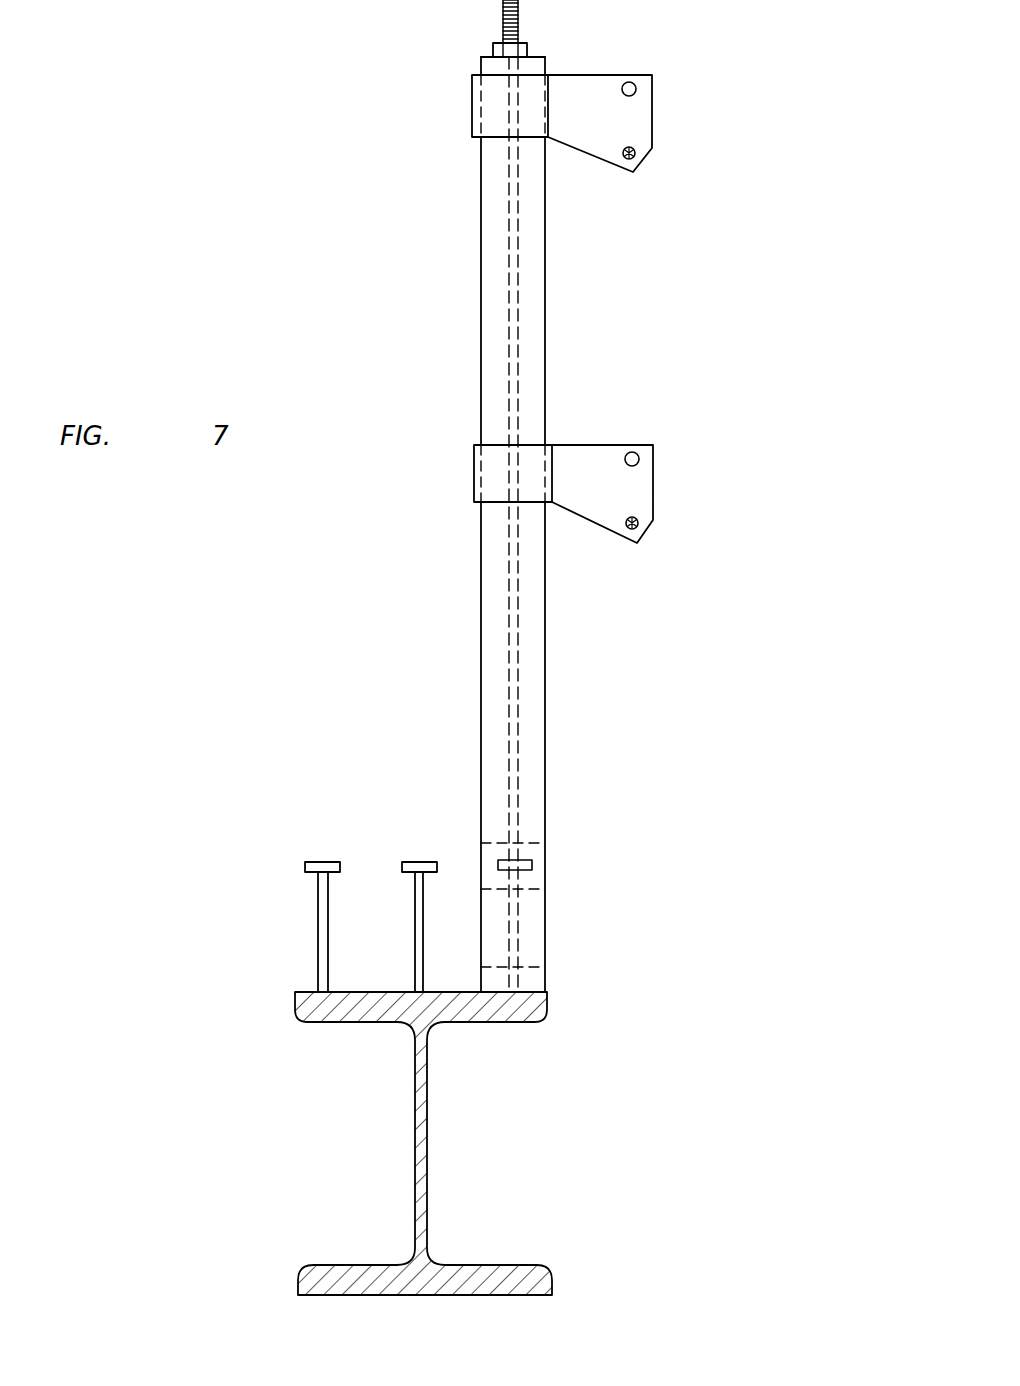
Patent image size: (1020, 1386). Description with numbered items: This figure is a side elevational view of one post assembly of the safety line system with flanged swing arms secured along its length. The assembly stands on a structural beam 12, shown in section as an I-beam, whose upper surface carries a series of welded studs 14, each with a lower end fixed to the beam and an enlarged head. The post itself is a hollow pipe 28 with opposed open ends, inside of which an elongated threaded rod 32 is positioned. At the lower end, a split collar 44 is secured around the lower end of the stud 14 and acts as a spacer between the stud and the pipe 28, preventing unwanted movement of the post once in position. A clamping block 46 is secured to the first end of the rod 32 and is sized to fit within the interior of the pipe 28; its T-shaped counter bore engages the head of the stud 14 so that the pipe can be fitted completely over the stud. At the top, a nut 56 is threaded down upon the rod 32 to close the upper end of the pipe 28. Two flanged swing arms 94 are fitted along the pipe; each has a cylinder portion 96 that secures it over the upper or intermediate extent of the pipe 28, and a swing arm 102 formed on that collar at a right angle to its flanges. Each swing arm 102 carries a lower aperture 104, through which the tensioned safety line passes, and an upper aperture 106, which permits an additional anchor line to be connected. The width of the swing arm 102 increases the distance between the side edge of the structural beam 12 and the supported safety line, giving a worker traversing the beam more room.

The structural beam 12 is at (427, 1100).
The stud 14 is at (322, 932).
The hollow pipe 28 is at (546, 612).
The threaded rod 32 is at (502, 12).
The split collar 44 is at (547, 976).
The clamping block 46 is at (547, 876).
The nut 56 is at (527, 50).
The flanged swing arm 94 is at (560, 157).
The cylinder portion 96 is at (492, 107).
The swing arm 102 is at (630, 120).
The lower aperture 104 is at (636, 158).
The upper aperture 106 is at (637, 88).